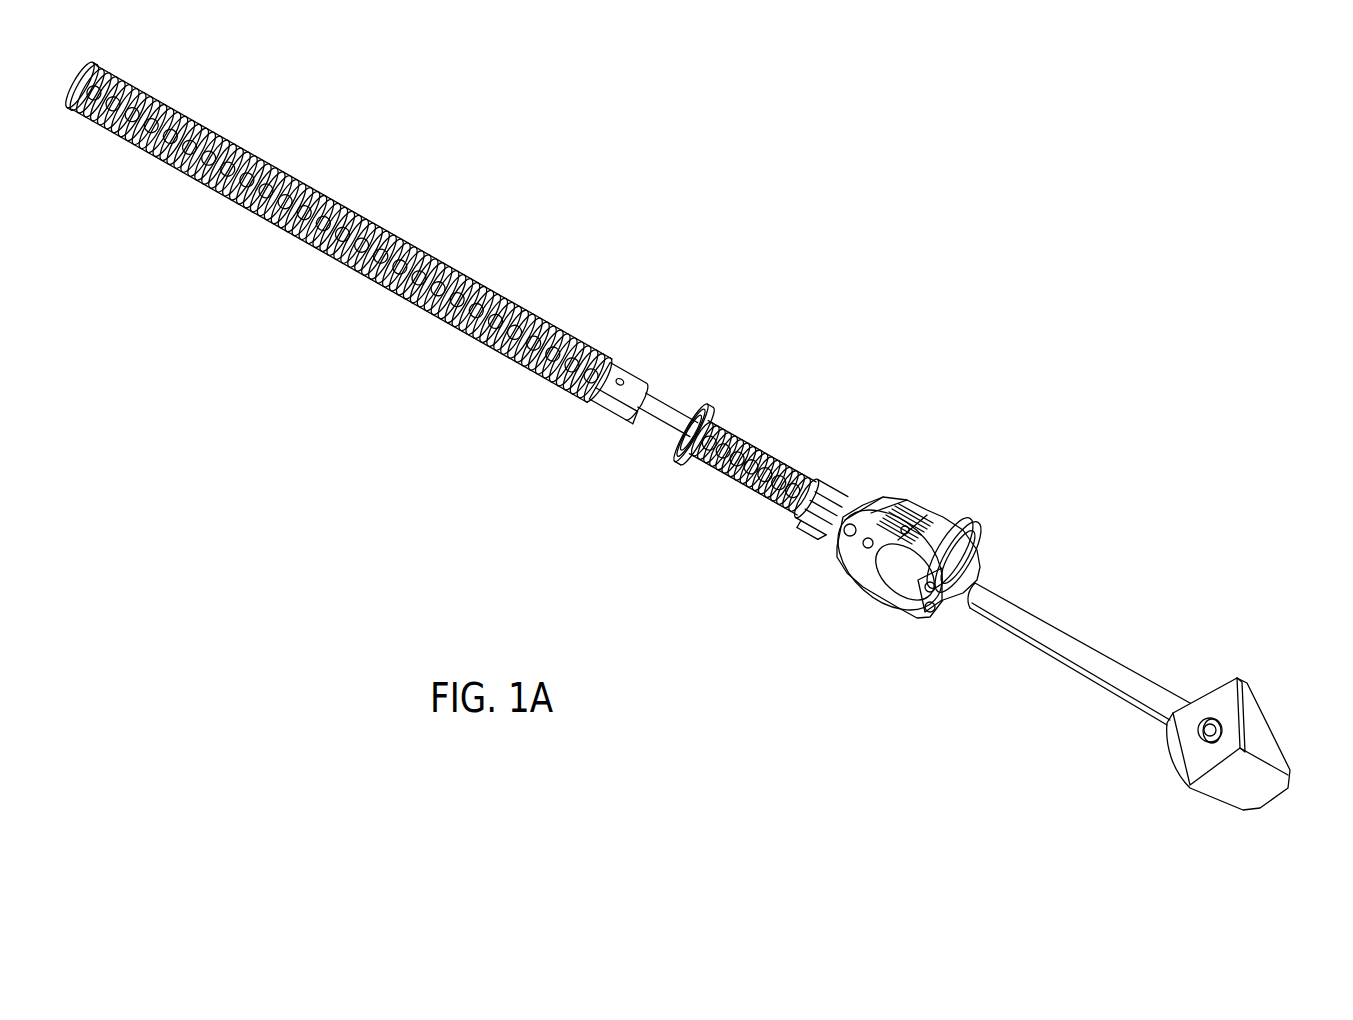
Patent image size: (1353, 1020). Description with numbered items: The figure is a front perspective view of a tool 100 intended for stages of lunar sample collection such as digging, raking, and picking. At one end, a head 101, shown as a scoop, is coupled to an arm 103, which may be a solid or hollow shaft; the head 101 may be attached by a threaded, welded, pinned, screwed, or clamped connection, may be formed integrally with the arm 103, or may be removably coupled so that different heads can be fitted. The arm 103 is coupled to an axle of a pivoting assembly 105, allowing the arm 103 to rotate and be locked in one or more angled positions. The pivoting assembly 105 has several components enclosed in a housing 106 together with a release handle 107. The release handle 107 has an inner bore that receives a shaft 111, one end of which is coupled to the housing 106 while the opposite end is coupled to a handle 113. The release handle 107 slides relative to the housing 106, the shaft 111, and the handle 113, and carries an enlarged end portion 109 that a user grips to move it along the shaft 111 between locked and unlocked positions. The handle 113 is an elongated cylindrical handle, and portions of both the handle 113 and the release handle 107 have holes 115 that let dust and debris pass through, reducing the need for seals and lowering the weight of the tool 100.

The tool 100 is at (942, 272).
The head 101 is at (1273, 733).
The arm 103 is at (1117, 657).
The pivoting assembly 105 is at (905, 651).
The housing 106 is at (973, 542).
The release handle 107 is at (792, 460).
The enlarged end portion 109 is at (713, 413).
The shaft 111 is at (680, 407).
The handle 113 is at (541, 301).
The holes 115 is at (427, 250).